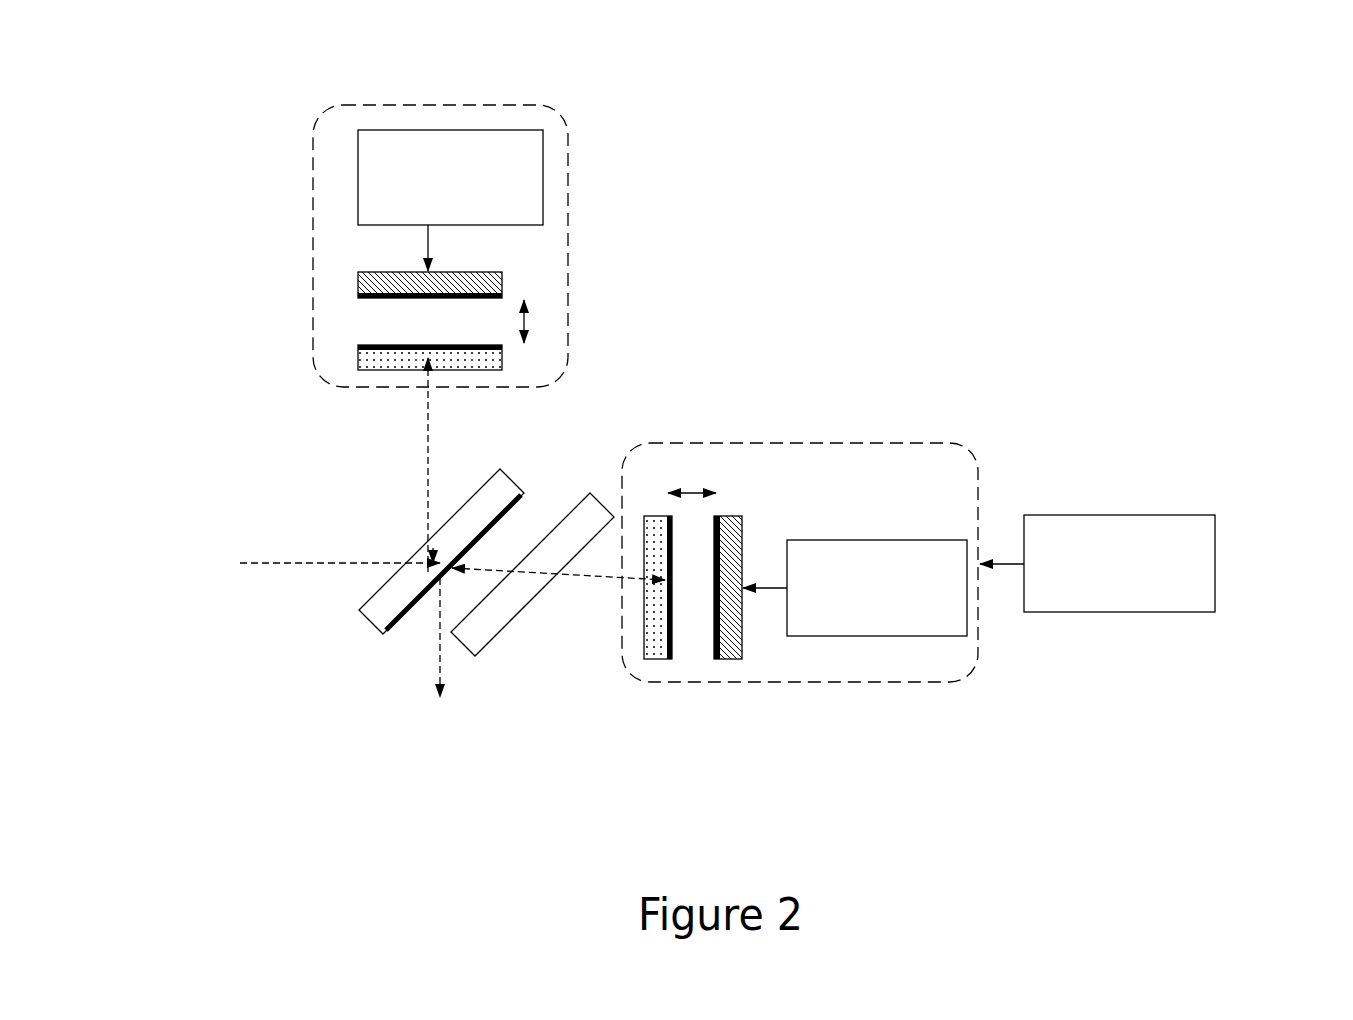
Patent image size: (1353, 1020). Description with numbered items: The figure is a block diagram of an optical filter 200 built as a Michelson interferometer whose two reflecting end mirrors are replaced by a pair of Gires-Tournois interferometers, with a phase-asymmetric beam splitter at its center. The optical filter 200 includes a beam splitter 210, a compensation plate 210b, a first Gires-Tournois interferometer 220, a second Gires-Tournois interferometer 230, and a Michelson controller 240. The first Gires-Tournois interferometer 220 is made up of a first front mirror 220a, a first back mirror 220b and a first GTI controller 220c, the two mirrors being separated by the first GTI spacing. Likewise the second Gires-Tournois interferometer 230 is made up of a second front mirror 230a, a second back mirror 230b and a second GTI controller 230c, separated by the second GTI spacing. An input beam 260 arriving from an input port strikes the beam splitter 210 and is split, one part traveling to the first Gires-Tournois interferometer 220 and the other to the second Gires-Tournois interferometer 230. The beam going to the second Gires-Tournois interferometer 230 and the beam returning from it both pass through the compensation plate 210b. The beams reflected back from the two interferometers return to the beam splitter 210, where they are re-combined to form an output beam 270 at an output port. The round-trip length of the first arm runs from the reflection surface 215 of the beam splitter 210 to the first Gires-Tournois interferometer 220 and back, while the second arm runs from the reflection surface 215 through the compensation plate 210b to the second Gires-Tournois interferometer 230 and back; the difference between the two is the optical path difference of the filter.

The optical filter 200 is at (1230, 378).
The beam splitter 210 is at (370, 644).
The compensation plate 210b is at (590, 492).
The reflection surface 215 is at (412, 607).
The GTI 1 220 is at (570, 175).
The GTI 1 front mirror 220a is at (357, 346).
The GTI 1 back mirror 220b is at (357, 295).
The GTI 1 controller 220c is at (357, 183).
The GTI 2 230 is at (858, 442).
The GTI 2 front mirror 230a is at (659, 661).
The GTI 2 back mirror 230b is at (736, 661).
The GTI 2 controller 230c is at (905, 638).
The Michelson controller 240 is at (1142, 613).
The input beam 260 is at (270, 546).
The output beam 270 is at (472, 682).